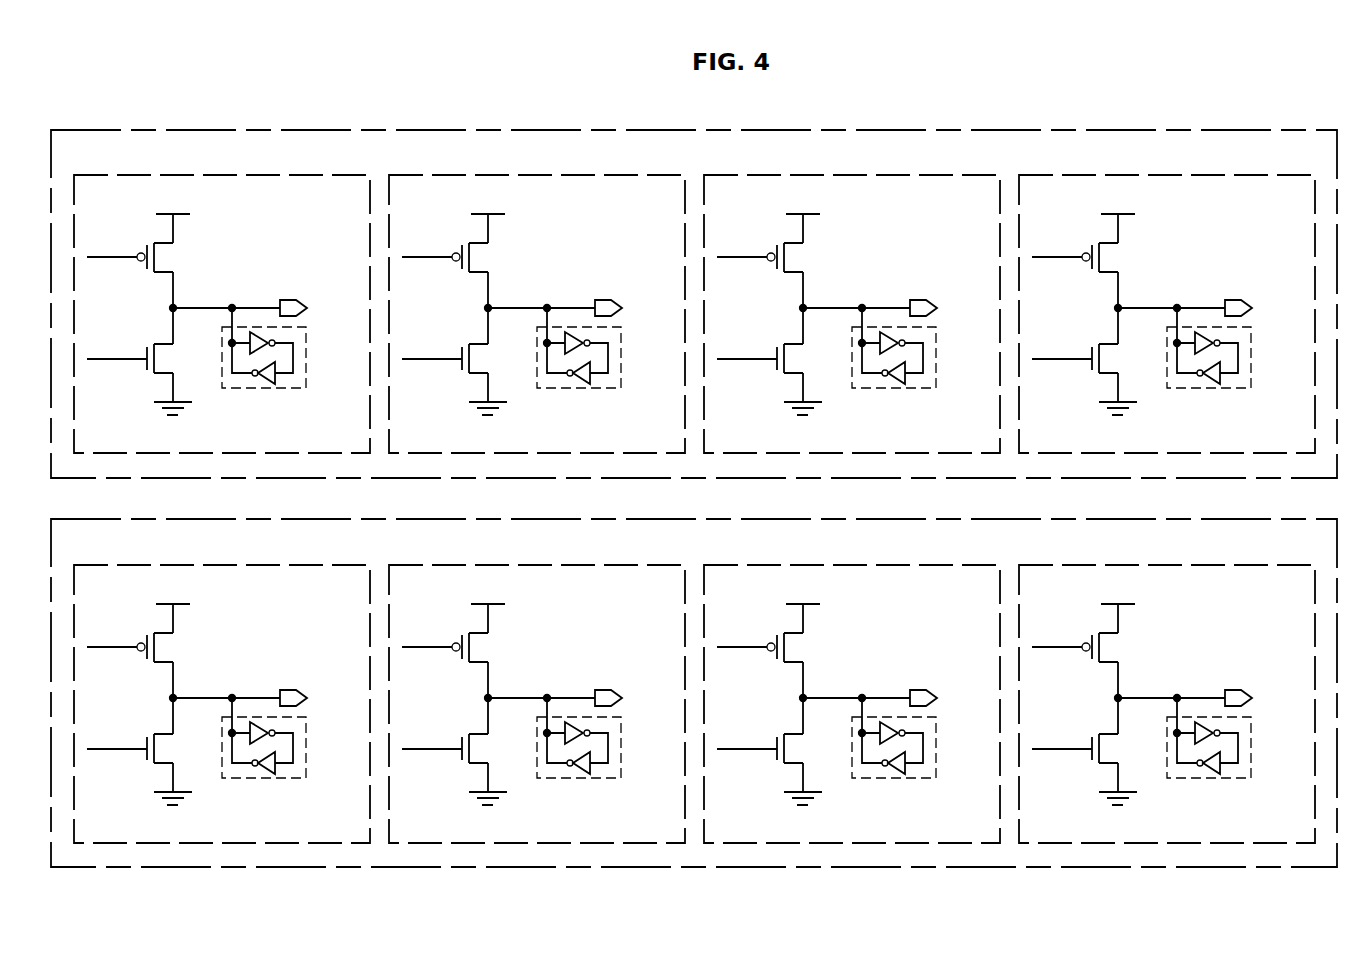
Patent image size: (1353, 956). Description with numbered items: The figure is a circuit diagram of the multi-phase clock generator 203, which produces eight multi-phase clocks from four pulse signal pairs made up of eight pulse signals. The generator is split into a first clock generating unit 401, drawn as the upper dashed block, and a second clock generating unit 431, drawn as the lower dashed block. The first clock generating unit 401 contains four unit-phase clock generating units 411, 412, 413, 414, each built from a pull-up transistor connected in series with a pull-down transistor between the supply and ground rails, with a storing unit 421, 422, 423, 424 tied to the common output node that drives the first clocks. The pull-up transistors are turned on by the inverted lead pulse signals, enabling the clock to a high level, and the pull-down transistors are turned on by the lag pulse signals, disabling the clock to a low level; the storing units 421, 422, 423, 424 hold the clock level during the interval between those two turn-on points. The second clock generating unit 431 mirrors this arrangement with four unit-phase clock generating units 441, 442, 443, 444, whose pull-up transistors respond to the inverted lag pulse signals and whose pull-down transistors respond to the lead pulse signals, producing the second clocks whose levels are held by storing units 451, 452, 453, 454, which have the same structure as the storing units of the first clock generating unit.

The multi-phase clock generator 203 is at (1067, 105).
The first clock generating unit 401 is at (1282, 130).
The second clock generating unit 431 is at (1282, 519).
The unit-phase clock generating unit 411 is at (223, 297).
The unit-phase clock generating unit 412 is at (538, 297).
The unit-phase clock generating unit 413 is at (853, 297).
The unit-phase clock generating unit 414 is at (1168, 297).
The unit-phase clock generating unit 441 is at (223, 687).
The unit-phase clock generating unit 442 is at (538, 687).
The unit-phase clock generating unit 443 is at (853, 687).
The unit-phase clock generating unit 444 is at (1168, 687).
The storing unit 421 is at (264, 364).
The storing unit 422 is at (579, 364).
The storing unit 423 is at (894, 364).
The storing unit 424 is at (1209, 364).
The storing unit 451 is at (264, 754).
The storing unit 452 is at (579, 754).
The storing unit 453 is at (894, 754).
The storing unit 454 is at (1209, 754).